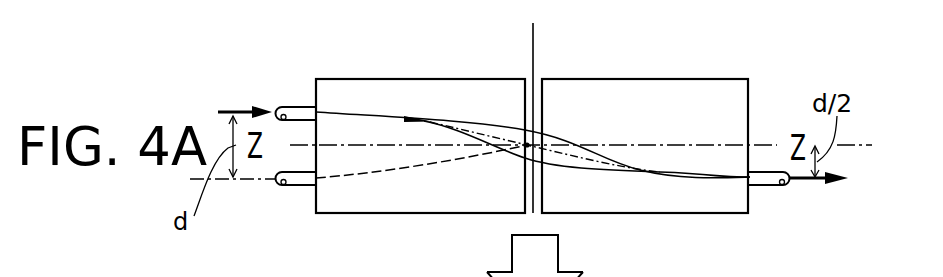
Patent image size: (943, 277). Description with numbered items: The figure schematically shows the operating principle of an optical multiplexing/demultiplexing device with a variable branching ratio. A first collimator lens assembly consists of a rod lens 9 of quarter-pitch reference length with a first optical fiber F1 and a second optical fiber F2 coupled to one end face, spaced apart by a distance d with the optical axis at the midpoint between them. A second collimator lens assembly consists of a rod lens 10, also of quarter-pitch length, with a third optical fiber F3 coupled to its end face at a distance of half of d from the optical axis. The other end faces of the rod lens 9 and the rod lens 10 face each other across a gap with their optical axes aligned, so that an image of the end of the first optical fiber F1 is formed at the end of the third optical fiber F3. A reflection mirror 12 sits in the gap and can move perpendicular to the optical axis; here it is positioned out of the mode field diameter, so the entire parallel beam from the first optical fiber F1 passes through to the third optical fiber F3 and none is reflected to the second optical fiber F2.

The rod lens 9 is at (422, 78).
The rod lens 10 is at (653, 78).
The reflection mirror 12 is at (533, 44).
The first optical fiber F1 is at (297, 106).
The second optical fiber F2 is at (302, 188).
The third optical fiber F3 is at (767, 187).